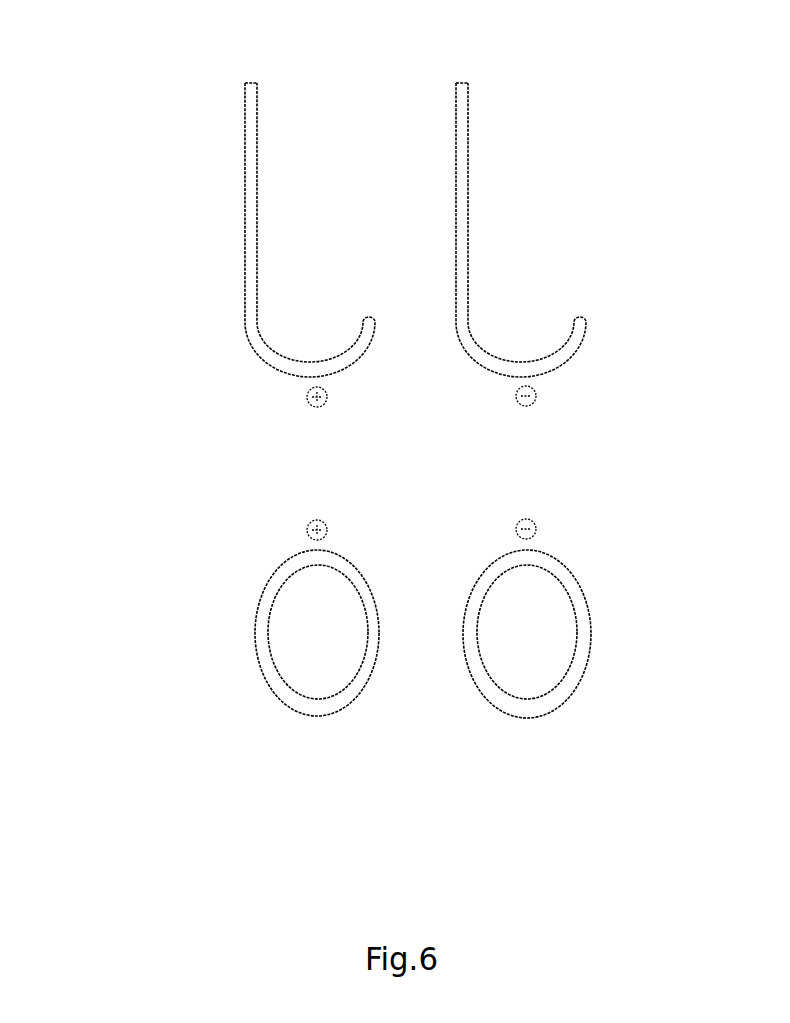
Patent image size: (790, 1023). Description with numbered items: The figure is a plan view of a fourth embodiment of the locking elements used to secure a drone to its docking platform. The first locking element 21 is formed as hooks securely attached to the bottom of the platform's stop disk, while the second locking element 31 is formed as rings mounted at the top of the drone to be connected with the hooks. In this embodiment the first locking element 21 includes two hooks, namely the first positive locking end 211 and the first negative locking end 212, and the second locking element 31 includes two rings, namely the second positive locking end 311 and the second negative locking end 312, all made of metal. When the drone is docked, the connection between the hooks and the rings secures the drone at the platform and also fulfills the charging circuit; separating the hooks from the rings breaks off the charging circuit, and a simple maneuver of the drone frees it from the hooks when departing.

The first locking element 21 is at (330, 237).
The first positive locking end 211 is at (250, 130).
The first negative locking end 212 is at (462, 133).
The second locking element 31 is at (383, 611).
The second positive locking end 311 is at (358, 585).
The second negative locking end 312 is at (573, 590).